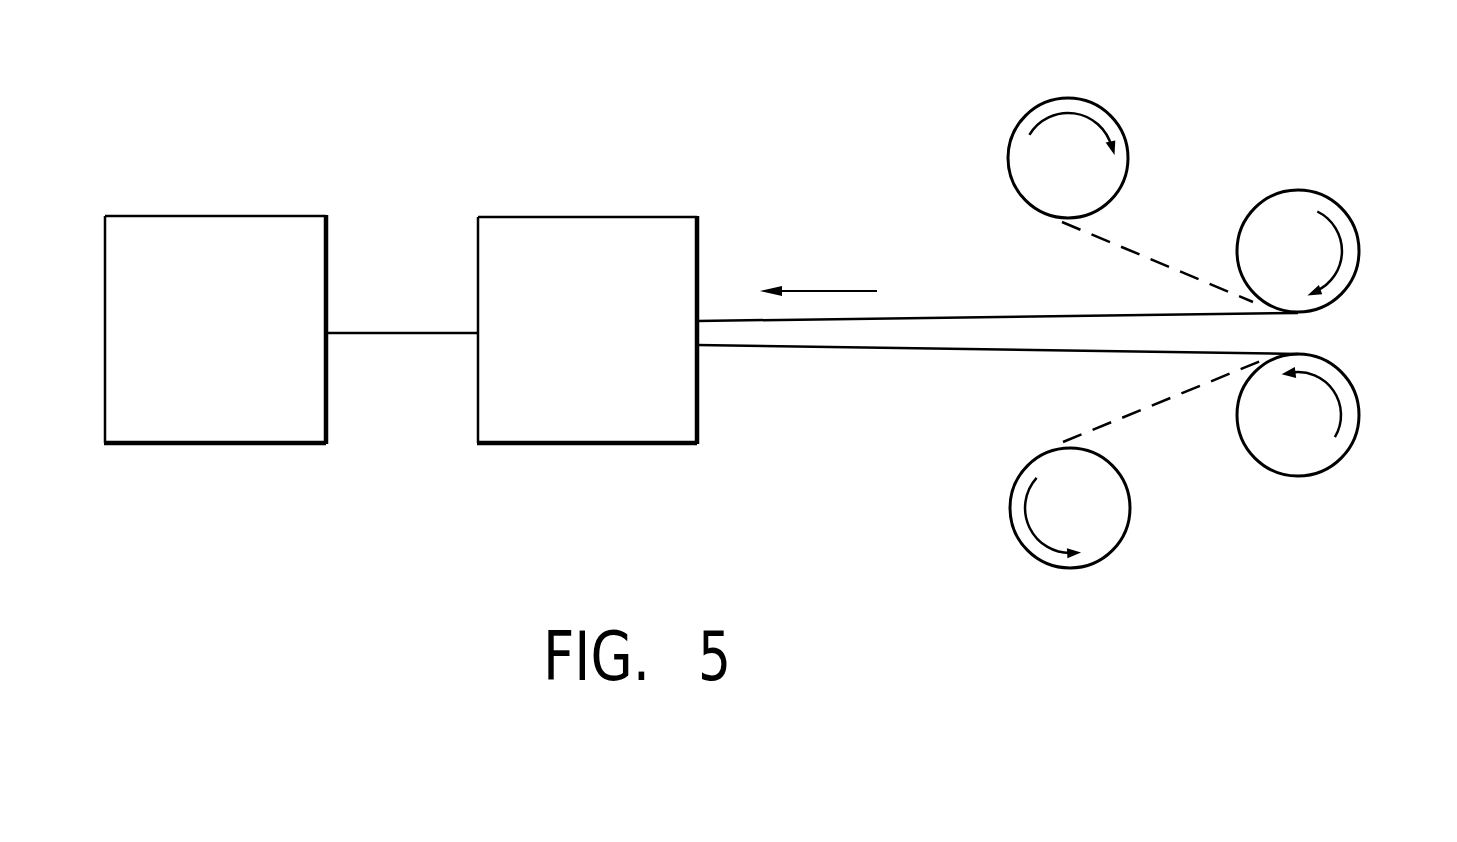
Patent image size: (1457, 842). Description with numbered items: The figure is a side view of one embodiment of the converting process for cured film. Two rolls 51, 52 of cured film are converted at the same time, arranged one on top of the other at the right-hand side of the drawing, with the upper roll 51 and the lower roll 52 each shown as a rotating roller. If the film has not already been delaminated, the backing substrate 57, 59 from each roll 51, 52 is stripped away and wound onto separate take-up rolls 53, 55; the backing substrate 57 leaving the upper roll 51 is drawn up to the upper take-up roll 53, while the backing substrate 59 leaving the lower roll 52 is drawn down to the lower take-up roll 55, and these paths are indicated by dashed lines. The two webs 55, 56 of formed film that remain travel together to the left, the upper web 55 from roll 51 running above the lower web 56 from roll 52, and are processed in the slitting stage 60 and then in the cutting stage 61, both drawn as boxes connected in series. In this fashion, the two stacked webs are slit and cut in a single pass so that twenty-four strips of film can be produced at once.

The roll of cured film 51 is at (1352, 222).
The roll of cured film 52 is at (1357, 403).
The roll 53 is at (1090, 98).
The web of formed film 55 is at (970, 317).
The web of formed film 56 is at (950, 350).
The backing substrate 57 is at (1172, 265).
The backing substrate 59 is at (1175, 400).
The slitting stage 60 is at (582, 217).
The cutting stage 61 is at (237, 215).